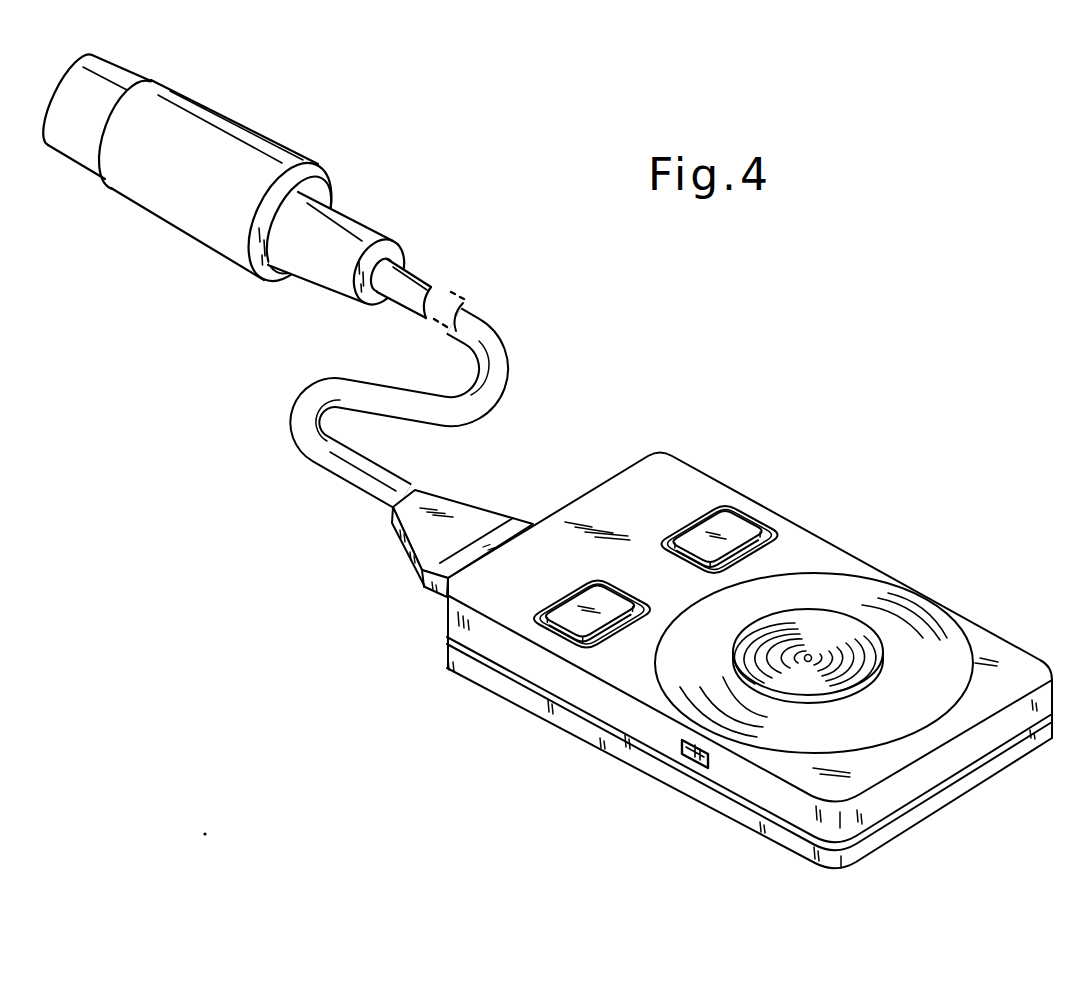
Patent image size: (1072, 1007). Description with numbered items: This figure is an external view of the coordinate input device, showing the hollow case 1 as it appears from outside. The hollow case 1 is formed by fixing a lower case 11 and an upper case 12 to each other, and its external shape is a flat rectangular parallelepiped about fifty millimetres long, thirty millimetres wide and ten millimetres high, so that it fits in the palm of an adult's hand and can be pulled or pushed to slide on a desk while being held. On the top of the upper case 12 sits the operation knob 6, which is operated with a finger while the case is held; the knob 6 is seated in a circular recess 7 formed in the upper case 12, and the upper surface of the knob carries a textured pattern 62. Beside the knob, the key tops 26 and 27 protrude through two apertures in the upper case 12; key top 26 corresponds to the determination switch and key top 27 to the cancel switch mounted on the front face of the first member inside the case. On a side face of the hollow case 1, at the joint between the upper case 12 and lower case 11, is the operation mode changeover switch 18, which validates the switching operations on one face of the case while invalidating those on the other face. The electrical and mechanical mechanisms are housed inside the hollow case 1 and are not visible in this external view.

The hollow case 1 is at (749, 661).
The operation knob 6 is at (838, 608).
The recess 7 is at (820, 576).
The lower case 11 is at (617, 750).
The upper case 12 is at (578, 697).
The operation mode changeover switch 18 is at (697, 766).
The key top 26 is at (560, 634).
The key top 27 is at (737, 520).
The knurled surface of disc 62 is at (870, 633).